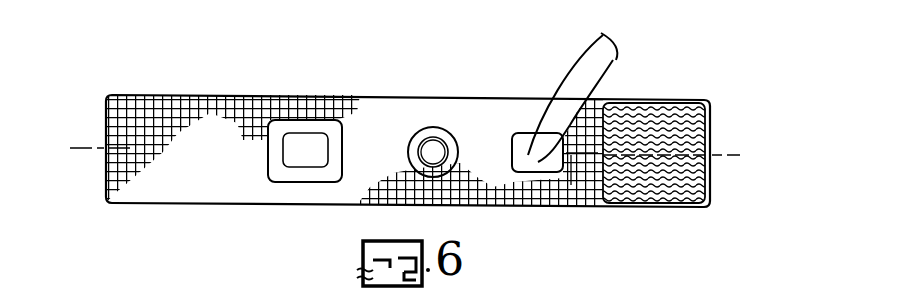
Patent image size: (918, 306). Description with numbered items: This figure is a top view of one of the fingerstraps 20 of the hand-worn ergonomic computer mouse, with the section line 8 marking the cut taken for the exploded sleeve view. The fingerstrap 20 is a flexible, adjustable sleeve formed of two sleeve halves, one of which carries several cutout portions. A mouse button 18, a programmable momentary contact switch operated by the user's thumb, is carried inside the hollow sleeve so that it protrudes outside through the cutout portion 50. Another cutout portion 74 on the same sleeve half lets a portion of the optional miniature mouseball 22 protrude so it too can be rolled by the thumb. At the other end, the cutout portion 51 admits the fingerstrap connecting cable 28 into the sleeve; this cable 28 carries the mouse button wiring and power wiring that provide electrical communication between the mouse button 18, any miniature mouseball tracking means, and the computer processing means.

The fingerstrap 20 is at (160, 70).
The cutout portion 50 is at (283, 130).
The mouse button 18 is at (305, 152).
The miniature mouseball 22 is at (430, 150).
The cutout portion 74 is at (431, 122).
The cutout portion 51 is at (527, 150).
The fingerstrap connecting cable 28 is at (585, 75).
The section line 8- 8 is at (82, 124).